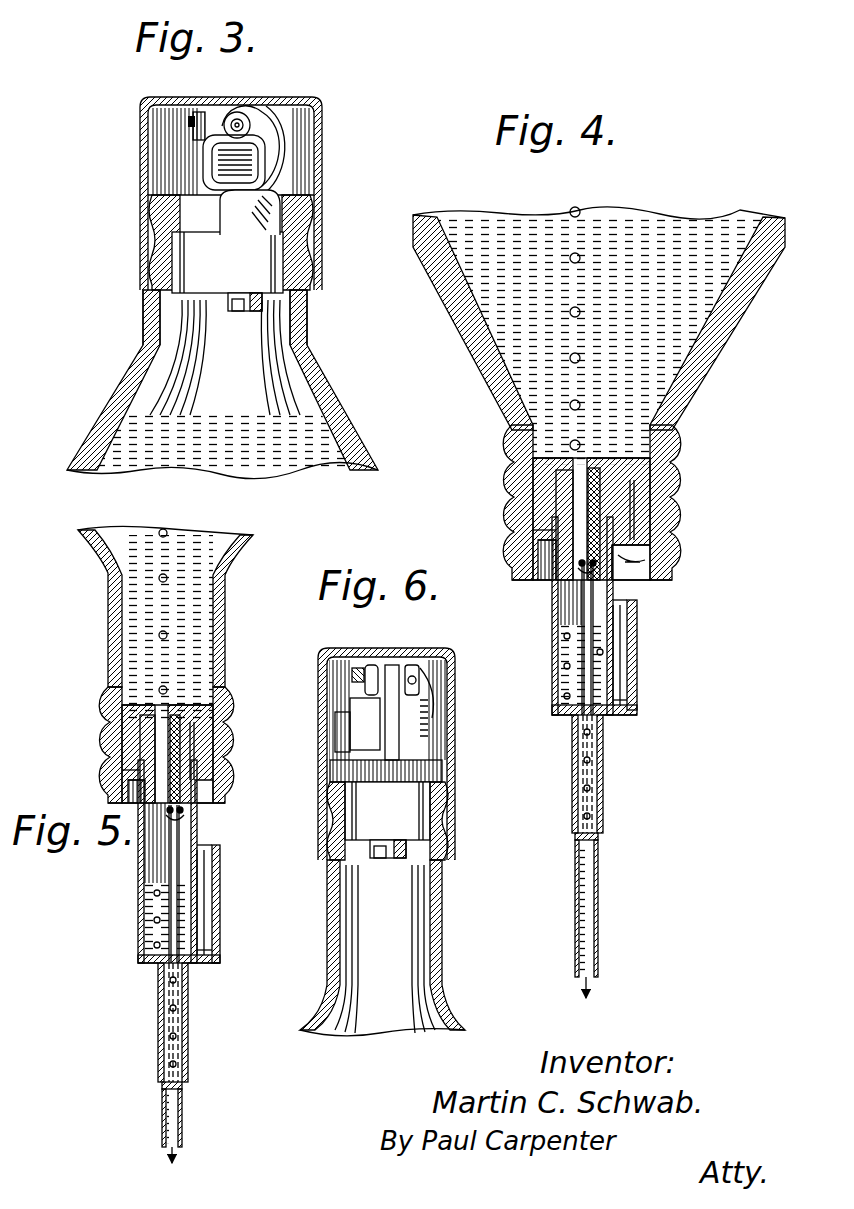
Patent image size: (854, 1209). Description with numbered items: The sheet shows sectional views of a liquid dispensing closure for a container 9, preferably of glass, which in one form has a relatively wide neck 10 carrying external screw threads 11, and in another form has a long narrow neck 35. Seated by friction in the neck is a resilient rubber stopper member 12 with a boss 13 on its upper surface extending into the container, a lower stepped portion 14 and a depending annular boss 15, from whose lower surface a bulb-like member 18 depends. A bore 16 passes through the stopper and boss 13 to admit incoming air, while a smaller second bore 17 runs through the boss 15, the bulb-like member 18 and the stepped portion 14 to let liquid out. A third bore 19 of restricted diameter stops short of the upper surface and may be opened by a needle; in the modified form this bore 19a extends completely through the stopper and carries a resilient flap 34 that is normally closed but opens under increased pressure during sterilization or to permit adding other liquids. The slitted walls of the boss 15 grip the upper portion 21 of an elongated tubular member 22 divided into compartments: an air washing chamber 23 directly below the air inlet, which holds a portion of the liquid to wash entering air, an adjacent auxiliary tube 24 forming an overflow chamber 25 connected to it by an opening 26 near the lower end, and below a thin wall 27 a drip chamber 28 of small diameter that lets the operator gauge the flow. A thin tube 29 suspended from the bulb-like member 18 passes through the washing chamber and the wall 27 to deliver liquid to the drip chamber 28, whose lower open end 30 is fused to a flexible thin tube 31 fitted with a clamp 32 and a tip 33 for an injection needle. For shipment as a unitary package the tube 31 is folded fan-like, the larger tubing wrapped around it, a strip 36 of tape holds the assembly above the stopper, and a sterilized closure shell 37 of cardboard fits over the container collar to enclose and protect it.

In FIG. 3, the container 9 is at (330, 393).
In FIG. 4, the container 9 is at (413, 231).
In FIG. 3, the neck 10 is at (308, 320).
In FIG. 4, the neck 10 is at (518, 456).
In FIG. 3, the external screw threads 11 is at (312, 259).
In FIG. 4, the external screw threads 11 is at (512, 522).
In FIG. 5, the external screw threads 11 is at (228, 755).
In FIG. 6, the external screw threads 11 is at (447, 838).
In FIG. 3, the stopper member 12 is at (176, 281).
In FIG. 4, the stopper member 12 is at (535, 490).
In FIG. 5, the stopper member 12 is at (215, 738).
In FIG. 6, the stopper member 12 is at (410, 818).
In FIG. 3, the boss 13 is at (263, 300).
In FIG. 4, the boss 13 is at (545, 460).
In FIG. 5, the boss 13 is at (130, 702).
In FIG. 6, the boss 13 is at (407, 866).
In FIG. 3, the lower stepped portion 14 is at (238, 305).
In FIG. 4, the lower stepped portion 14 is at (600, 470).
In FIG. 5, the lower stepped portion 14 is at (185, 715).
In FIG. 6, the lower stepped portion 14 is at (372, 860).
In FIG. 4, the depending annular boss 15 is at (548, 554).
In FIG. 5, the depending annular boss 15 is at (122, 762).
In FIG. 4, the bore 16 is at (548, 506).
In FIG. 5, the bore 16 is at (122, 740).
In FIG. 4, the second bore 17 is at (601, 488).
In FIG. 5, the second bore 17 is at (181, 722).
In FIG. 4, the bulb-like member 18 is at (582, 567).
In FIG. 5, the bulb-like member 18 is at (182, 812).
In FIG. 5, the third bore 19 is at (140, 776).
In FIG. 4, the bore 19a is at (678, 517).
In FIG. 4, the upper portion of tubular member 21 is at (545, 531).
In FIG. 5, the upper portion of tubular member 21 is at (112, 803).
In FIG. 3, the tubular member 22 is at (254, 220).
In FIG. 4, the tubular member 22 is at (550, 657).
In FIG. 5, the tubular member 22 is at (136, 882).
In FIG. 6, the tubular member 22 is at (427, 753).
In FIG. 4, the air washing chamber 23 is at (560, 678).
In FIG. 5, the air washing chamber 23 is at (150, 900).
In FIG. 6, the air washing chamber 23 is at (345, 748).
In FIG. 4, the auxiliary tube 24 is at (636, 679).
In FIG. 5, the auxiliary tube 24 is at (205, 919).
In FIG. 6, the auxiliary tube 24 is at (350, 735).
In FIG. 4, the overflow chamber 25 is at (622, 646).
In FIG. 5, the overflow chamber 25 is at (208, 900).
In FIG. 4, the opening 26 is at (615, 706).
In FIG. 5, the opening 26 is at (200, 956).
In FIG. 4, the thin wall 27 is at (568, 722).
In FIG. 5, the thin wall 27 is at (140, 963).
In FIG. 4, the drip chamber 28 is at (603, 787).
In FIG. 5, the drip chamber 28 is at (165, 997).
In FIG. 4, the thin tube 29 is at (597, 592).
In FIG. 5, the thin tube 29 is at (182, 838).
In FIG. 4, the lower open end 30 is at (600, 839).
In FIG. 5, the lower open end 30 is at (165, 1086).
In FIG. 3, the thin tube 31 is at (212, 162).
In FIG. 4, the thin tube 31 is at (599, 928).
In FIG. 5, the thin tube 31 is at (183, 1133).
In FIG. 6, the thin tube 31 is at (440, 722).
In FIG. 3, the clamp 32 is at (205, 112).
In FIG. 6, the clamp 32 is at (416, 665).
In FIG. 3, the tip 33 is at (247, 112).
In FIG. 6, the tip 33 is at (372, 665).
In FIG. 4, the flap 34 is at (660, 575).
In FIG. 5, the long narrow neck 35 is at (228, 648).
In FIG. 6, the long narrow neck 35 is at (445, 934).
In FIG. 3, the strip of tape 36 is at (264, 140).
In FIG. 6, the strip of tape 36 is at (393, 665).
In FIG. 3, the closure shell 37 is at (320, 166).
In FIG. 6, the closure shell 37 is at (452, 752).